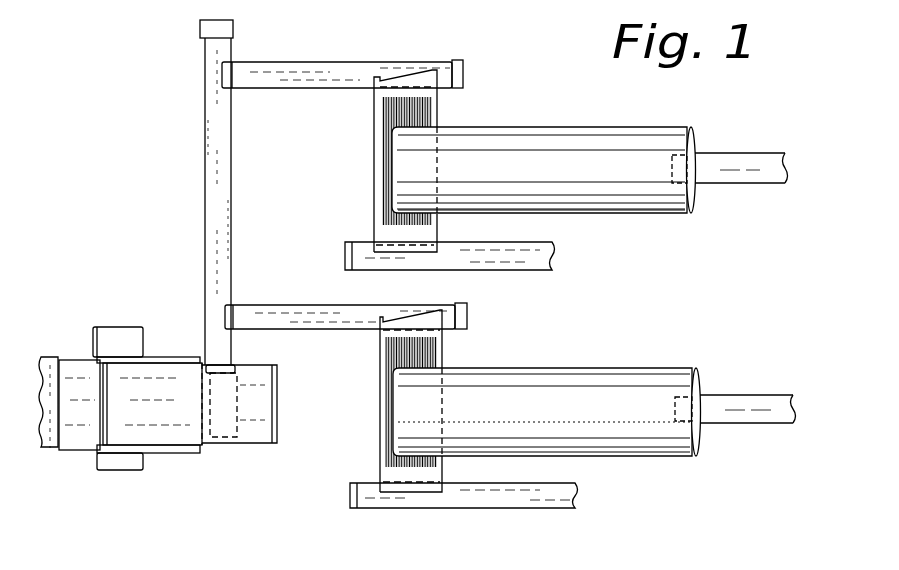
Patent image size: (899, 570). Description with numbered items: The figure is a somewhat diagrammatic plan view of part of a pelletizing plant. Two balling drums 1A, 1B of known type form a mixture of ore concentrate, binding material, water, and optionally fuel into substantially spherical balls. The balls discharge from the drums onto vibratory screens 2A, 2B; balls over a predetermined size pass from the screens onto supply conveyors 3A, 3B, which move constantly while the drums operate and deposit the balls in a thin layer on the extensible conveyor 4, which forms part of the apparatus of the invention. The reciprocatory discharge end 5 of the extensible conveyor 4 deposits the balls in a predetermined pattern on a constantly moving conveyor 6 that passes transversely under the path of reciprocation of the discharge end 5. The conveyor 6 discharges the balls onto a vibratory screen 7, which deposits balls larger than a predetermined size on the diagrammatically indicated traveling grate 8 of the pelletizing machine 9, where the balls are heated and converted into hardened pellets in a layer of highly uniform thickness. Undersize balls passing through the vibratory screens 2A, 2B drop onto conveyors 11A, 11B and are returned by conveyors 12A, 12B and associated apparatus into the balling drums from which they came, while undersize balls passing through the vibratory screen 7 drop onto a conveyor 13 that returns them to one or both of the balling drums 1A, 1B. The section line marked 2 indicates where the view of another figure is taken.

The balling drum 1A is at (573, 374).
The balling drum 1B is at (576, 133).
The vibratory screen 2A is at (426, 360).
The vibratory screen 2B is at (422, 120).
The supply conveyor 3A is at (304, 314).
The supply conveyor 3B is at (316, 70).
The extensible conveyor 4 is at (210, 184).
The reciprocatory discharge end 5 is at (218, 7).
The constantly moving conveyor 6 is at (183, 450).
The vibratory screen 7 is at (98, 380).
The traveling grate 8 is at (170, 357).
The pelletizing machine 9 is at (48, 353).
The conveyor 11A is at (389, 473).
The conveyor 11B is at (383, 232).
The conveyor 12A is at (510, 503).
The conveyor 12B is at (506, 262).
The conveyor 13 is at (116, 337).
The section line 2- 2 is at (295, 437).